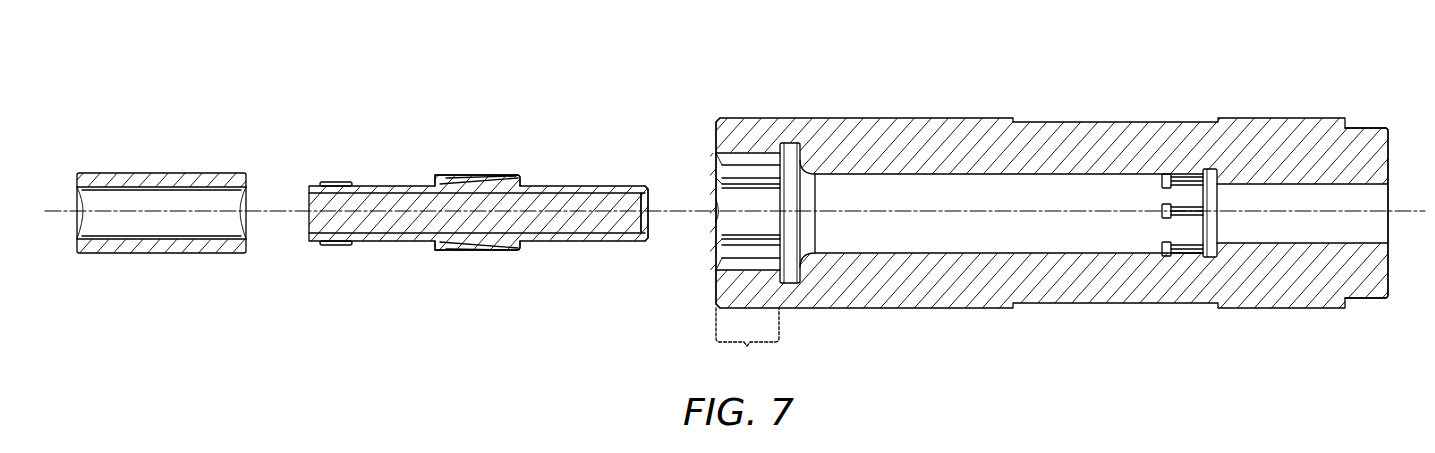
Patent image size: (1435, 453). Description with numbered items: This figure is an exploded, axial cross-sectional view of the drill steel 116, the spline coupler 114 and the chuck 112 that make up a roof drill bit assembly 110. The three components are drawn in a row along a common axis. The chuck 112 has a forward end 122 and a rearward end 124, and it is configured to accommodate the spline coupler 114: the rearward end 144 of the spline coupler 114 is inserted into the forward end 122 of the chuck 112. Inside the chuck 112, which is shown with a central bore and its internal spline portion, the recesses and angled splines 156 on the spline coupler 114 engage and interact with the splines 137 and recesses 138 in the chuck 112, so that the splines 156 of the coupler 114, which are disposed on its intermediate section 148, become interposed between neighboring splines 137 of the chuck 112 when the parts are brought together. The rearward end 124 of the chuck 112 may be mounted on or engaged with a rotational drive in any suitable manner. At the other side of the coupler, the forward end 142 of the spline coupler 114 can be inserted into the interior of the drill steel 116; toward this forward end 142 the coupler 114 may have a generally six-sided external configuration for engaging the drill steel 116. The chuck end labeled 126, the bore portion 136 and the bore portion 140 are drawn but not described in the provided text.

The roof drill bit assembly 110 is at (218, 80).
The chuck 112 is at (842, 112).
The spline coupler 114 is at (405, 183).
The drill steel 116 is at (176, 170).
The forward end of chuck 122 is at (716, 130).
The rearward end of chuck 124 is at (748, 265).
The second end of housing 126 is at (1390, 140).
The central bore 136 is at (944, 205).
The splines of chuck 137 is at (1163, 180).
The recesses of chuck 138 is at (1185, 195).
The outlet bore 140 is at (1302, 208).
The forward end of spline coupler 142 is at (312, 187).
The rearward end of spline coupler 144 is at (648, 186).
The intermediate section of spline coupler 148 is at (436, 176).
The angled splines of spline coupler 156 is at (443, 247).